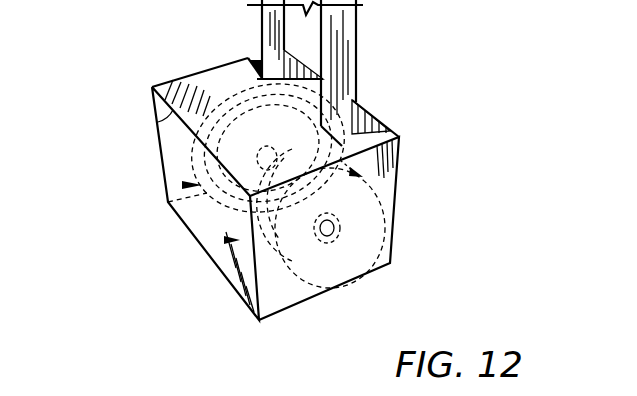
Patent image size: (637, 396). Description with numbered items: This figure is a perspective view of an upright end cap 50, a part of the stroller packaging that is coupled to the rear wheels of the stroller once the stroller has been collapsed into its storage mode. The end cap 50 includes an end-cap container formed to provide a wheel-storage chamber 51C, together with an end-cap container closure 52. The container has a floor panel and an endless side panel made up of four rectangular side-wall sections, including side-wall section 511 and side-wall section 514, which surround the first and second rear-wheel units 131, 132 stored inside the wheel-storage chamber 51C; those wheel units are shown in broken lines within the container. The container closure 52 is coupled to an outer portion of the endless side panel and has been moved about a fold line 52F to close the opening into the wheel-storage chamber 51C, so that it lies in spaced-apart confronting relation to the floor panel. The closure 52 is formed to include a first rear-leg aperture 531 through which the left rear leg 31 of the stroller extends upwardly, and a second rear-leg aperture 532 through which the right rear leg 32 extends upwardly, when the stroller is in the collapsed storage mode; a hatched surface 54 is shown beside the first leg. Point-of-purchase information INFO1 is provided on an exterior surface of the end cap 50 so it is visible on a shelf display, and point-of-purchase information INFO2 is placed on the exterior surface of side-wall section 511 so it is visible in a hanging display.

The end cap 50 is at (226, 297).
The end-cap container closure 52 is at (218, 84).
The fold line 52F is at (158, 122).
The second rear-leg aperture 532 is at (256, 61).
The right rear leg 32 is at (262, 35).
The left rear leg 31 is at (355, 45).
The first rear-leg aperture 531 is at (353, 100).
The slot surface 54 is at (358, 128).
The second rear-wheel unit 132 is at (168, 184).
The point-of-purchase information INFO1 is at (168, 203).
The side-wall section 511 is at (207, 228).
The wheel-storage chamber 51C is at (206, 250).
The side-wall section 514 is at (273, 294).
The first rear-wheel unit 131 is at (391, 205).
The point-of-purchase information INFO2 is at (350, 240).